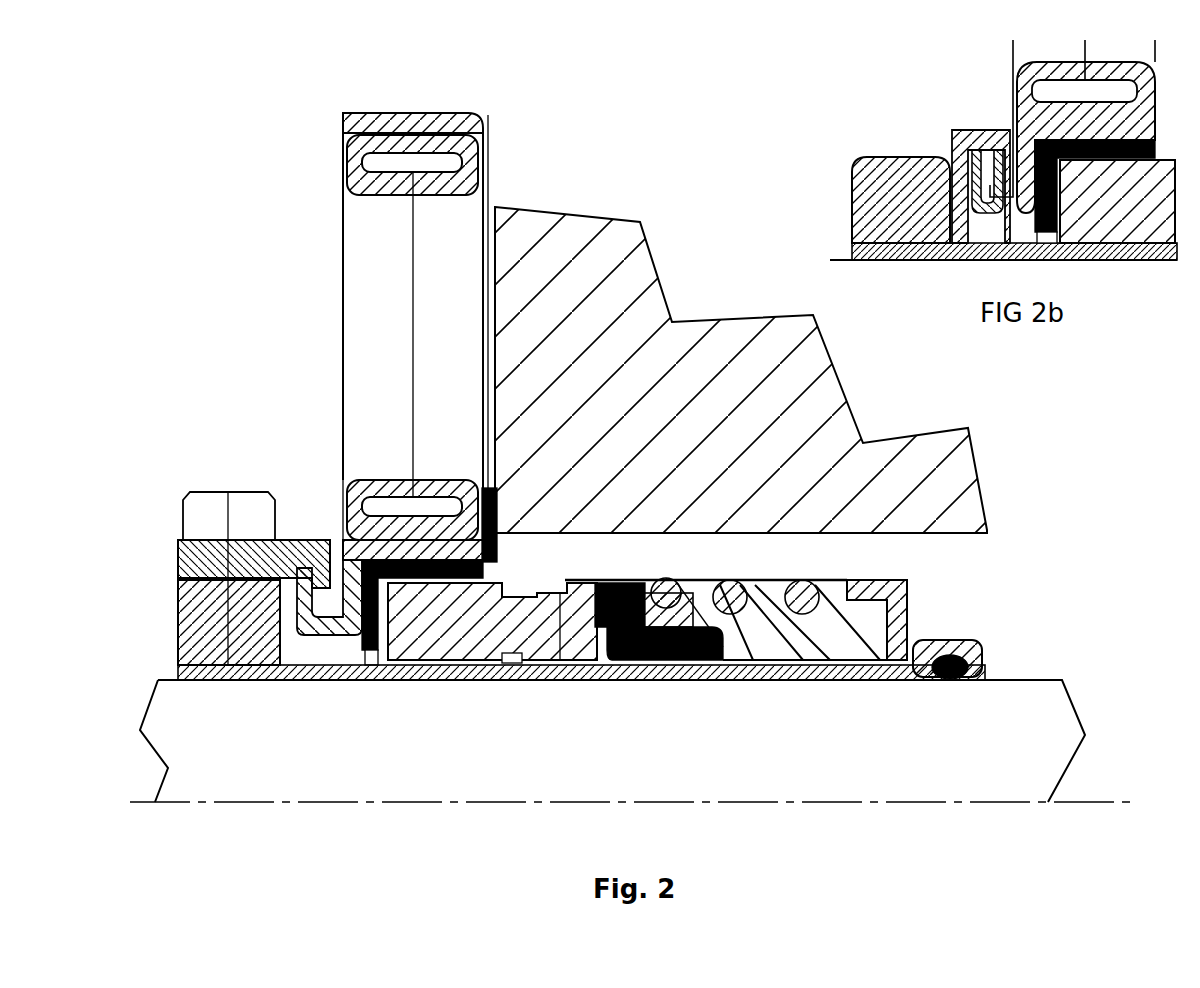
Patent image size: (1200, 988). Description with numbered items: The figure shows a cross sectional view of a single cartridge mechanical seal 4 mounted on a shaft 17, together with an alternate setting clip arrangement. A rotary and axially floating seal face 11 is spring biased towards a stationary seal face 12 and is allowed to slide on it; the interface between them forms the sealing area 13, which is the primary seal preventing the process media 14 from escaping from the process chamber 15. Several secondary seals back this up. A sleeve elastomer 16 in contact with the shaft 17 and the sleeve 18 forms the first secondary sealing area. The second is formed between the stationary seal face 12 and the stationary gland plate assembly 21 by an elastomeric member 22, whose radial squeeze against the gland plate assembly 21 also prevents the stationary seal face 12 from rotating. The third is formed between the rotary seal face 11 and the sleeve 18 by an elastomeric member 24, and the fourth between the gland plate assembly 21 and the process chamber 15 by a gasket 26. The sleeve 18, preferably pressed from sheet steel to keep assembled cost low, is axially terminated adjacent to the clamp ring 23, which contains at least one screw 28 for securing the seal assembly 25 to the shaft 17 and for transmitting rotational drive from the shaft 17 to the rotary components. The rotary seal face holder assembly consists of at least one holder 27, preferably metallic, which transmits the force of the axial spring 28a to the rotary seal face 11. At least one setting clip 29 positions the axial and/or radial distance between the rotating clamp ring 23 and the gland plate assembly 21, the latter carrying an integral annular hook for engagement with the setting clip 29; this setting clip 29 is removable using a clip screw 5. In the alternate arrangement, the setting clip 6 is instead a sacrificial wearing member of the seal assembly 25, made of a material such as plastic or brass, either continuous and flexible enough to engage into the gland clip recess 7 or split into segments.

In FIG. 2, the single cartridge mechanical seal 4 is at (272, 186).
In FIG. 2, the seal assembly 25 is at (305, 302).
In FIG. 2, the stationary gland plate assembly 21 is at (428, 116).
In FIG. 2, the gasket 26 is at (488, 115).
In FIG. 2, the holder 27 is at (633, 585).
In FIG. 2, the process chamber 15 is at (773, 523).
In FIG. 2, the clip screw 5 is at (226, 490).
In FIG. 2, the setting clip 29 is at (190, 548).
In FIG. 2, the clamp ring 23 is at (182, 603).
In FIG. 2, the screw 28 is at (225, 620).
In FIG. 2, the elastomeric member 22 is at (368, 652).
In FIG. 2, the stationary seal face 12 is at (430, 630).
In FIG. 2, the sealing area 13 is at (490, 682).
In FIG. 2, the rotary seal face 11 is at (560, 662).
In FIG. 2, the elastomeric member 24 is at (628, 662).
In FIG. 2, the sleeve 18 is at (778, 662).
In FIG. 2, the axial spring 28a is at (803, 600).
In FIG. 2, the sleeve elastomer 16 is at (943, 678).
In FIG. 2, the process media 14 is at (982, 583).
In FIG. 2, the shaft 17 is at (1053, 705).
In FIG. 2b, the sacrificial setting clip 6 is at (985, 132).
In FIG. 2b, the gland clip recess 7 is at (962, 245).